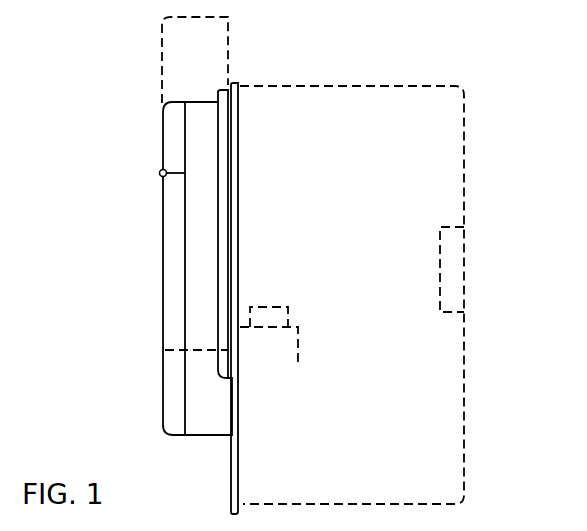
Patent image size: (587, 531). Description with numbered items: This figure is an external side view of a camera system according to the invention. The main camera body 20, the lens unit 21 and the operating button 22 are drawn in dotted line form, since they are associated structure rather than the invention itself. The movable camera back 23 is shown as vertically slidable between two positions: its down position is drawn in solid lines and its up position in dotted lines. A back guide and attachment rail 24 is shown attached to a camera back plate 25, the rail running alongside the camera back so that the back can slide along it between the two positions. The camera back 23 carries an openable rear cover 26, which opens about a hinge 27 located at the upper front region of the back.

The main camera body 20 is at (452, 170).
The lens unit 21 is at (453, 272).
The operating button 22 is at (250, 319).
The movable camera back 23 is at (215, 283).
The back guide and attachment rail 24 is at (220, 113).
The camera back plate 25 is at (237, 126).
The openable rear cover 26 is at (163, 261).
The hinge 27 is at (159, 171).